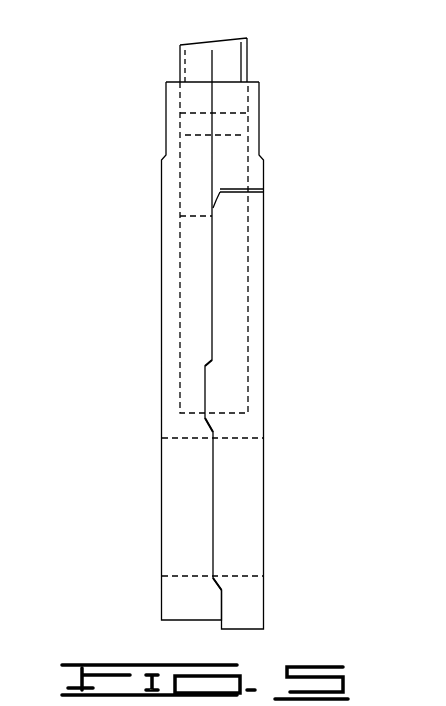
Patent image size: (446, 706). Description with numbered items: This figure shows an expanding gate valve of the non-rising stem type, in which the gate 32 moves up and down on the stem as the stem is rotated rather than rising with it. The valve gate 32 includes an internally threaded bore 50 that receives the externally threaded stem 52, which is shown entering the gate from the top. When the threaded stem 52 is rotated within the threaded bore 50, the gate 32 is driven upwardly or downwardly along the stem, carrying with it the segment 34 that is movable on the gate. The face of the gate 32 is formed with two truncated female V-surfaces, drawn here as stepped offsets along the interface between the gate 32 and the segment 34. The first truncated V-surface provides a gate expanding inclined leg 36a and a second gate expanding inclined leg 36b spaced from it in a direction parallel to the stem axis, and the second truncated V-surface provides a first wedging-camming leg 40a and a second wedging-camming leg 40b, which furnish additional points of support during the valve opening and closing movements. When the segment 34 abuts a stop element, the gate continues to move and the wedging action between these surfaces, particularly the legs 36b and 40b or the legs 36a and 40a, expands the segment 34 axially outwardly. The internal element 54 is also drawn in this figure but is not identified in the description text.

The gate 32 is at (196, 523).
The segment 34 is at (244, 522).
The gate expanding inclined leg 36a is at (213, 208).
The gate expanding inclined leg 36b is at (220, 583).
The first wedging-camming leg 40a is at (208, 362).
The second wedging-camming leg 40b is at (205, 430).
The threaded bore 50 is at (182, 140).
The threaded stem 52 is at (197, 52).
The inner chamber 54 is at (247, 255).